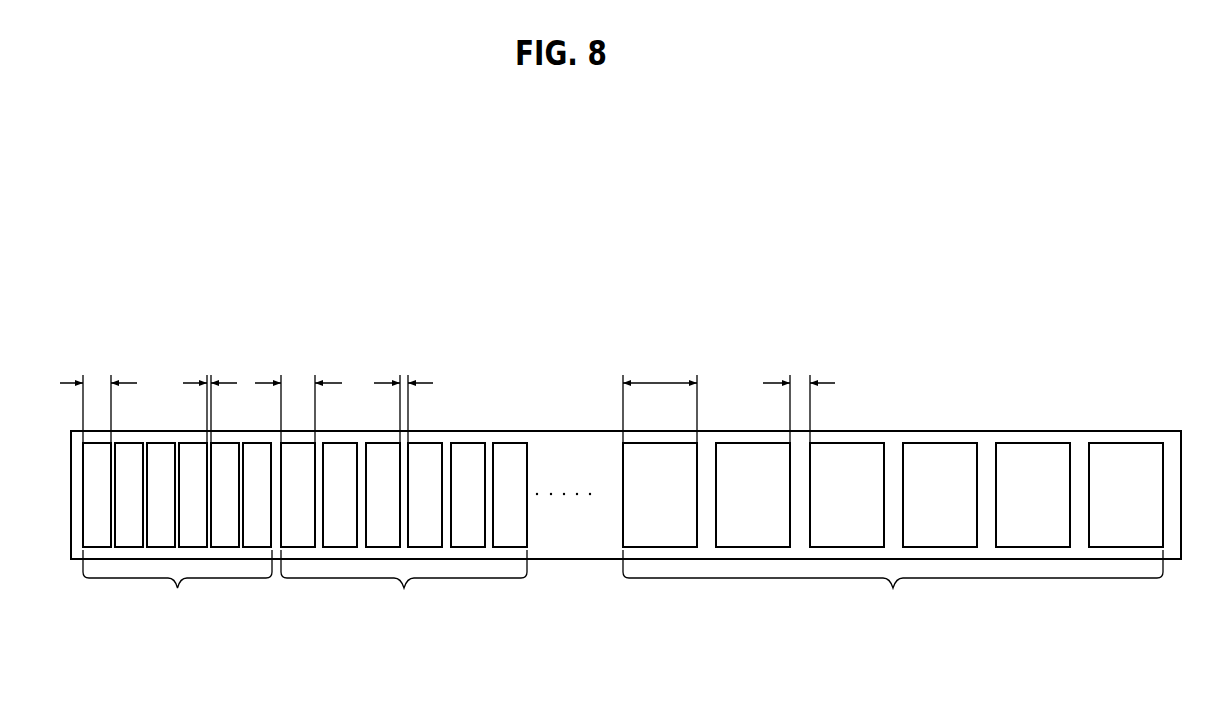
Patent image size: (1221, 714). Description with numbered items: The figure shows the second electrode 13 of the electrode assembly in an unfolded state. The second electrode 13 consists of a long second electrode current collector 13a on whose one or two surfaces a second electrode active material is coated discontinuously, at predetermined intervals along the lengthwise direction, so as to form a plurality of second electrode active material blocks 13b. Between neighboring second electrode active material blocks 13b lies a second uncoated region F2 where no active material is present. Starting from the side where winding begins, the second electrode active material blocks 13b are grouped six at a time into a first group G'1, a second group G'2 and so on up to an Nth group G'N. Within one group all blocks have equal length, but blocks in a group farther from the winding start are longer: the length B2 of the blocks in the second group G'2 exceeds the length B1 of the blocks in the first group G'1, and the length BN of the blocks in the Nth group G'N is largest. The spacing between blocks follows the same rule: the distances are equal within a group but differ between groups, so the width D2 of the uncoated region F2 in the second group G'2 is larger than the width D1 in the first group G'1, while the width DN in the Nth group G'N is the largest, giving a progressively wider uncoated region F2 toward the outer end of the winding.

The second electrode 13 is at (762, 334).
The second electrode current collector 13a is at (565, 437).
The second electrode active material block 13b is at (657, 453).
The second uncoated region F2 is at (113, 450).
The length of second electrode active material block in first group B1 is at (98, 398).
The width of uncoated region in first group D1 is at (210, 398).
The length of second electrode active material blocks in second group B2 is at (298, 398).
The width of uncoated region in second group D2 is at (403, 398).
The length of second electrode active material blocks in Nth group BN is at (660, 398).
The width of uncoated region in Nth group DN is at (799, 398).
The first group G'1 is at (177, 584).
The second group G'2 is at (404, 584).
The Nth group G'N is at (893, 584).